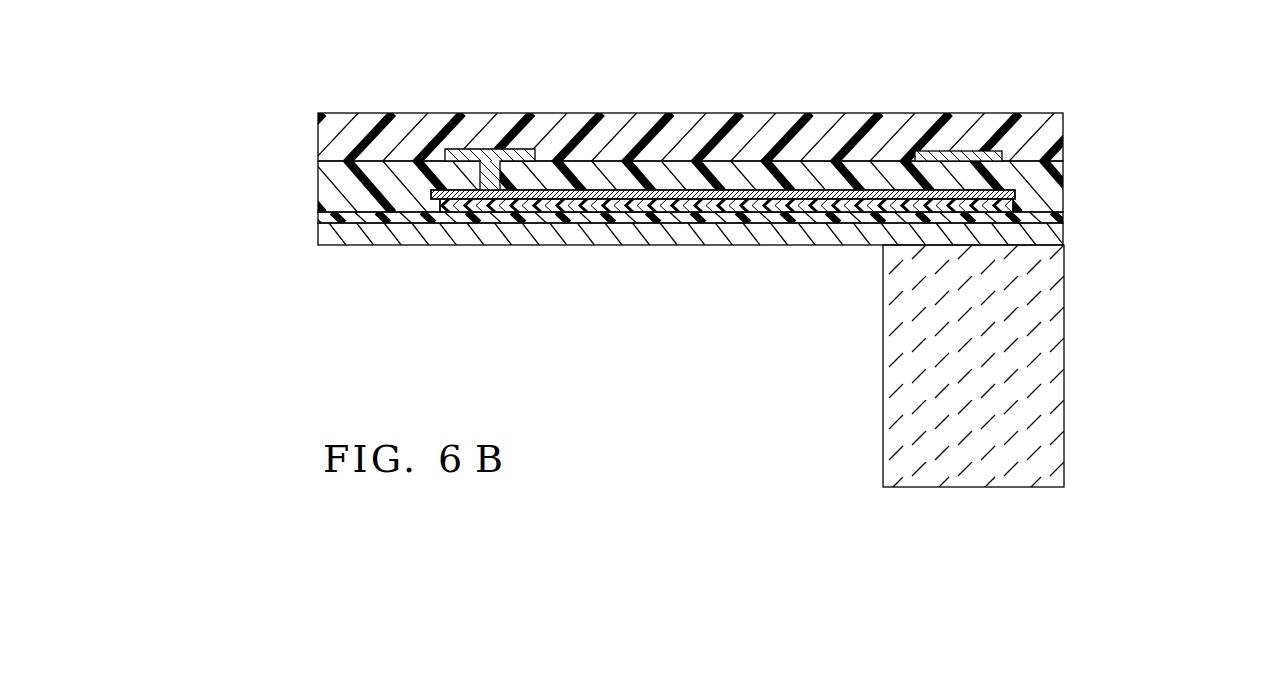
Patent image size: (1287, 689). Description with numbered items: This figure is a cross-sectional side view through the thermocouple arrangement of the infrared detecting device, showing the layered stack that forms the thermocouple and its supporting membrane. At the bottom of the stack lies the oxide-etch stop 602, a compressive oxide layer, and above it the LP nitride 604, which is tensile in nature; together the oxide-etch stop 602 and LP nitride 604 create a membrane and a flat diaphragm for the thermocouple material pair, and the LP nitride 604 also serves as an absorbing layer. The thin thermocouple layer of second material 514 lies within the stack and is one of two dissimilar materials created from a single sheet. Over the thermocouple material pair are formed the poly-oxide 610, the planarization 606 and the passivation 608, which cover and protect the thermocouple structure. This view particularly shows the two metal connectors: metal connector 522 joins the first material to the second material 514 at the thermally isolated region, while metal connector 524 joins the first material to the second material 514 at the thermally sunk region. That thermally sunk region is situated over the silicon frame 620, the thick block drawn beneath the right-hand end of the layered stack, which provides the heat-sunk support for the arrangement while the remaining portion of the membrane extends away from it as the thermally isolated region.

The oxide-etch stop 602 is at (341, 238).
The LP nitride 604 is at (345, 210).
The planarization 606 is at (1057, 197).
The passivation 608 is at (1038, 118).
The poly-oxide 610 is at (743, 192).
The second material 514 is at (613, 205).
The metal connector 522 is at (497, 149).
The metal connector 524 is at (947, 155).
The silicon frame 620 is at (890, 348).